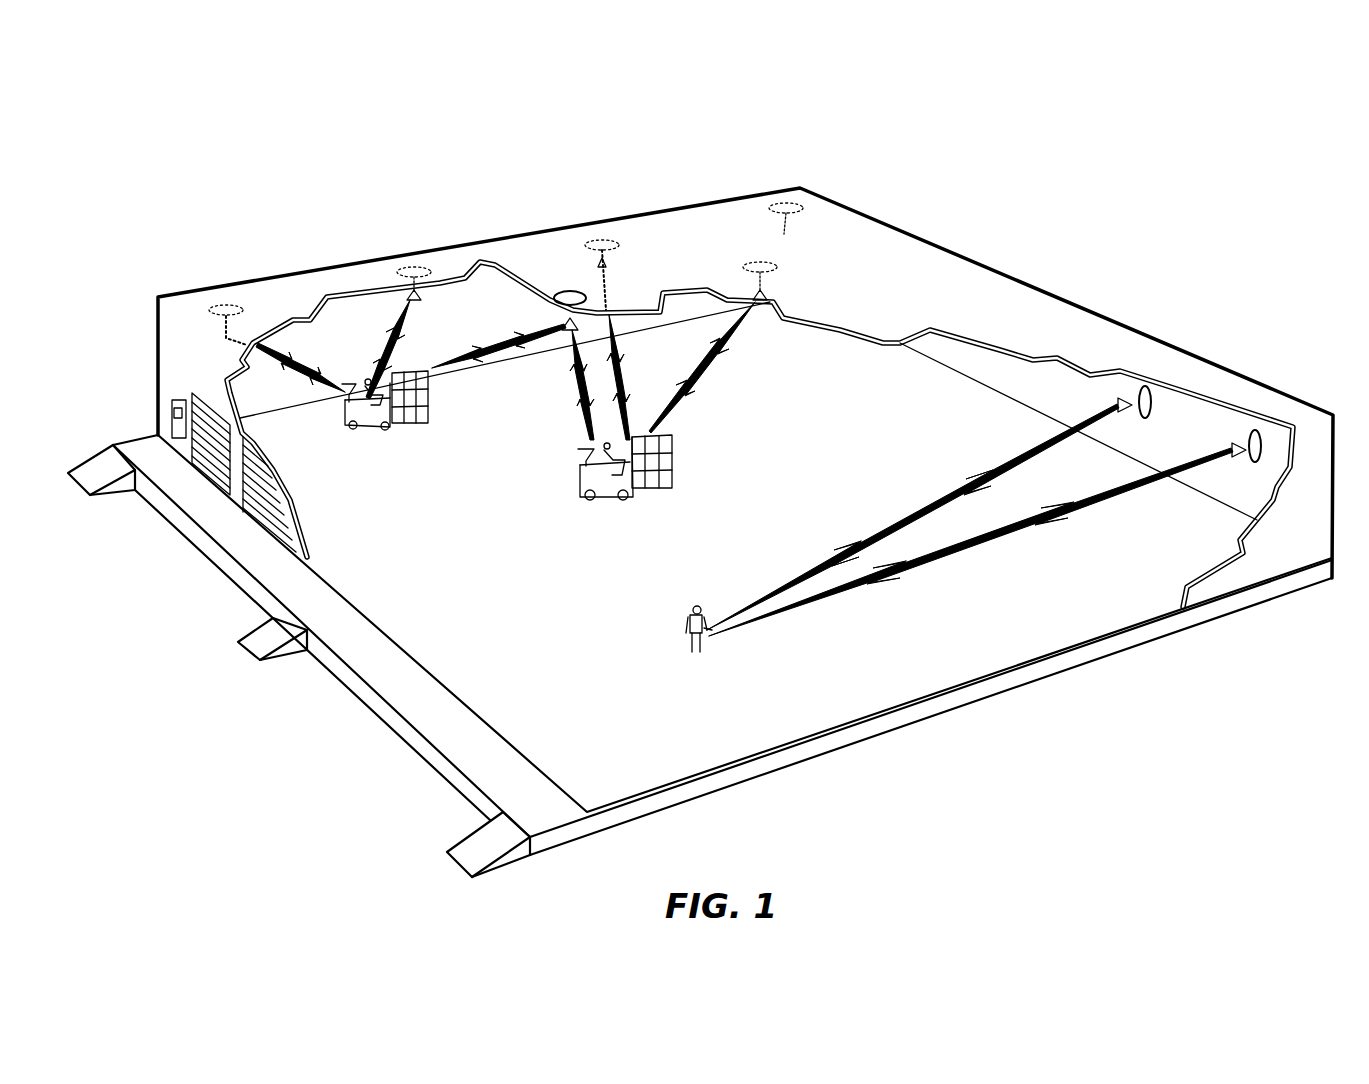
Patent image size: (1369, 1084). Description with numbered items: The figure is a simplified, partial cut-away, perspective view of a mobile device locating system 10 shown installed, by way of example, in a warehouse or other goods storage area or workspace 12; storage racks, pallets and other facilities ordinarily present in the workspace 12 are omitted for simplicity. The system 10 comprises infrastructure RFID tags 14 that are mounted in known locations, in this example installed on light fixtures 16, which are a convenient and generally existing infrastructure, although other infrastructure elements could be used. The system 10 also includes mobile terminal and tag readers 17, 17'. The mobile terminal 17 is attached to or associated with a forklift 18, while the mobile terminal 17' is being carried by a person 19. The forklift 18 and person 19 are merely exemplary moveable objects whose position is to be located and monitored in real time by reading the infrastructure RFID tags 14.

The mobile device locating system 10 is at (1025, 152).
The warehouse or workspace 12 is at (1110, 318).
The infrastructure RFID tags 14 is at (222, 334).
The light fixtures 16 is at (224, 305).
The mobile terminal and tag reader 17 is at (439, 436).
The mobile terminal and tag reader 17' is at (672, 648).
The forklift 18 is at (366, 430).
The person 19 is at (698, 606).